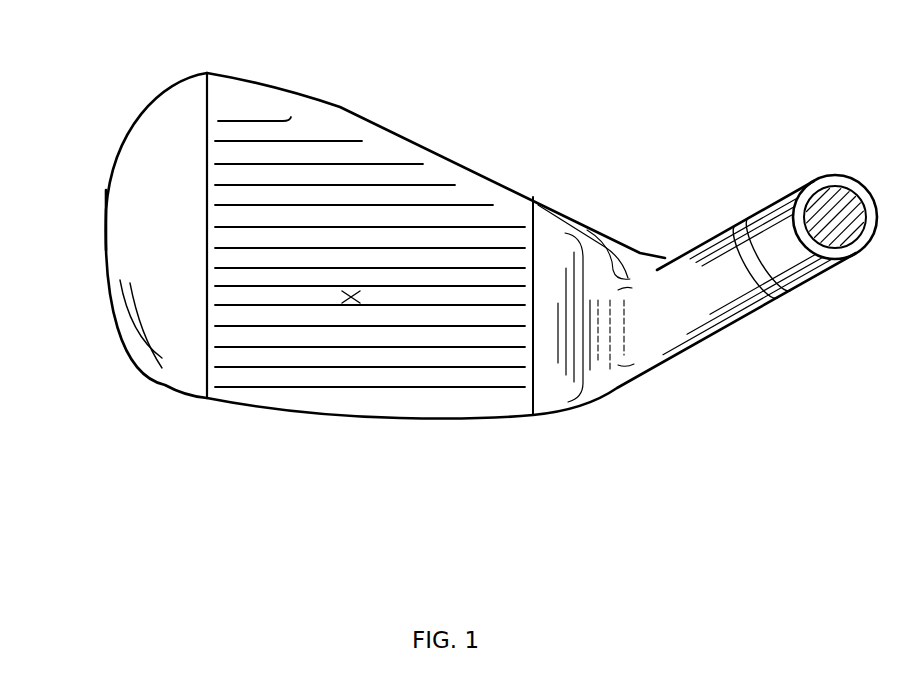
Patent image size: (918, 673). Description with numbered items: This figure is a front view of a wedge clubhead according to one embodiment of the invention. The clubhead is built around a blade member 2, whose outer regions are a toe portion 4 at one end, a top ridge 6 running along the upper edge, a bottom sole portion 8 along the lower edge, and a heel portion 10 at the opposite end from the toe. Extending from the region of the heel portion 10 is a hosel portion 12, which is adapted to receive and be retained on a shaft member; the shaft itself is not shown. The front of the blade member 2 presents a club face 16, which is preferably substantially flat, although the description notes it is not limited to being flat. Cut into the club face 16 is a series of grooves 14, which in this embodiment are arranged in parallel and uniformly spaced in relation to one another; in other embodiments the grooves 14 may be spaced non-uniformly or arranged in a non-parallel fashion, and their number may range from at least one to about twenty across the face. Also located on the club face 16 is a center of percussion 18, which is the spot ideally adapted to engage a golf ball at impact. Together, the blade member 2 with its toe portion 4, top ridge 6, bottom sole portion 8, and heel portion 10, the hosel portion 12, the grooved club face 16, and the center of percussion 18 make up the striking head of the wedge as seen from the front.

The blade member 2 is at (392, 140).
The toe portion 4 is at (105, 220).
The top ridge 6 is at (253, 83).
The bottom sole portion 8 is at (412, 420).
The heel portion 10 is at (641, 253).
The hosel portion 12 is at (752, 300).
The grooves 14 is at (523, 228).
The club face 16 is at (478, 192).
The center of percussion 18 is at (342, 300).